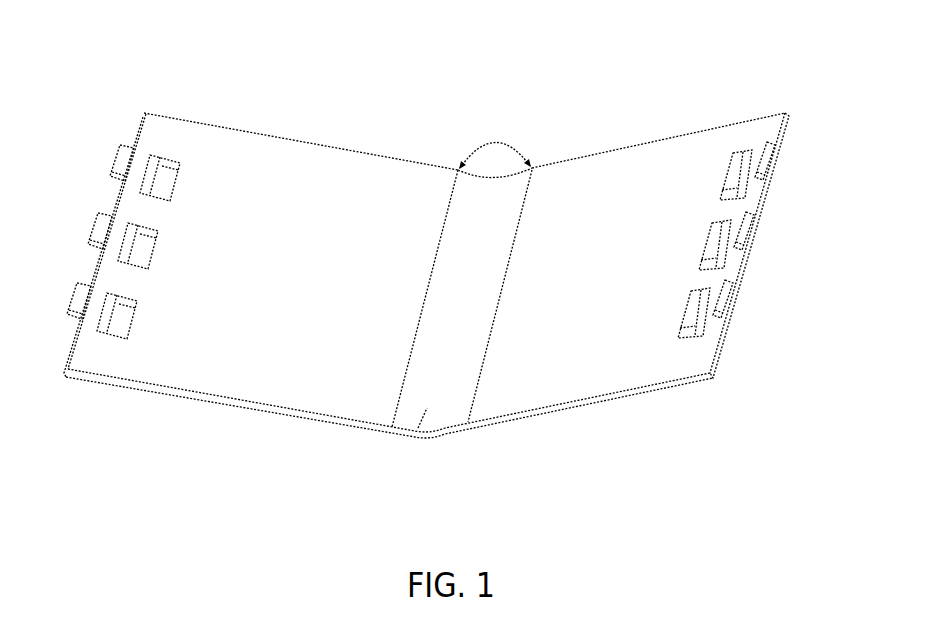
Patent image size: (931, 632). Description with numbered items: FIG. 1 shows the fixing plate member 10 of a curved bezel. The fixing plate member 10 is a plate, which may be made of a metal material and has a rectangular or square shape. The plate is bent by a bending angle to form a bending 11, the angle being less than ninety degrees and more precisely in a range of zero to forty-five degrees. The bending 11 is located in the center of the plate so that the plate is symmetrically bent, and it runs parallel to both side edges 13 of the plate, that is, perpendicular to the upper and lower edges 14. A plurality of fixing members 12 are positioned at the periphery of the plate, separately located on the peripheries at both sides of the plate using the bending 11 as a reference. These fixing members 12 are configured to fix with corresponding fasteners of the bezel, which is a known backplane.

The fixing plate member 10 is at (386, 80).
The bending 11 is at (422, 437).
The fixing members 12 is at (121, 161).
The side edges 13 is at (793, 122).
The upper and lower edges 14 is at (655, 142).